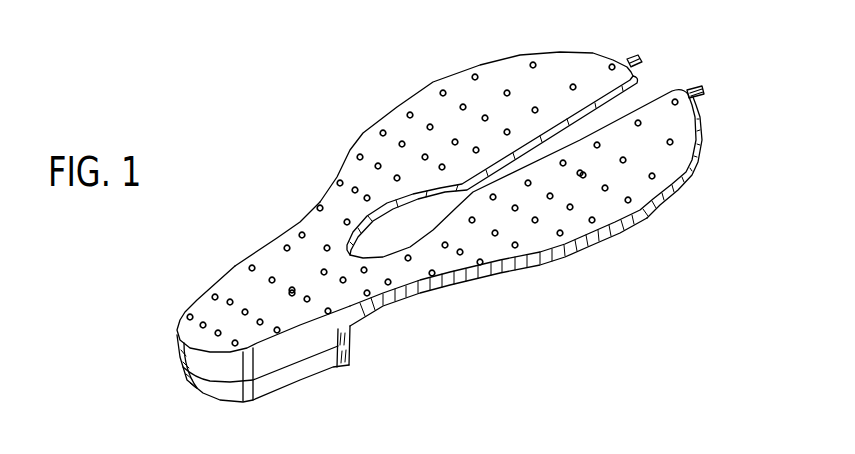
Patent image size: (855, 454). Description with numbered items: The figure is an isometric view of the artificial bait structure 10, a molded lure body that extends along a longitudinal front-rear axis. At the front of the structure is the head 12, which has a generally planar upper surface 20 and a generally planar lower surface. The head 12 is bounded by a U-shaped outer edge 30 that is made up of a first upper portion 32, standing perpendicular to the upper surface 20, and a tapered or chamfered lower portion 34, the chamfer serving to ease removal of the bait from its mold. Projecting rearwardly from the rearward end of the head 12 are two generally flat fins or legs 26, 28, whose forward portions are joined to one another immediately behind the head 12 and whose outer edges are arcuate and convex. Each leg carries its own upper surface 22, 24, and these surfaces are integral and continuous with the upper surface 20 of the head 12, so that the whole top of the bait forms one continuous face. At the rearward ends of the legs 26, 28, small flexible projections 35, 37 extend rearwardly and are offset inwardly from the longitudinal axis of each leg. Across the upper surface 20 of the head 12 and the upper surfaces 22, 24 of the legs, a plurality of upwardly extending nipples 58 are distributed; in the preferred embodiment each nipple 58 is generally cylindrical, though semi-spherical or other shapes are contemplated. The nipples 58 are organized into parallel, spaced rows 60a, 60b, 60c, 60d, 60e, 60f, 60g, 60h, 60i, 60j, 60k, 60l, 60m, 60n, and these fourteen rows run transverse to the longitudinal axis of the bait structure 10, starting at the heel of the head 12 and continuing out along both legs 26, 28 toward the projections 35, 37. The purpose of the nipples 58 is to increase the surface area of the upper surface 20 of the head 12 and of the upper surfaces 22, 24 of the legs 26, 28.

The artificial bait structure 10 is at (436, 229).
The head 12 is at (298, 388).
The upper surface 20 is at (244, 290).
The upper surface 22 is at (392, 150).
The upper surface 24 is at (665, 158).
The leg 26 is at (439, 80).
The leg 28 is at (671, 192).
The U-shaped outer edge 30 is at (180, 366).
The first upper portion 32 is at (182, 352).
The lower portion 34 is at (322, 367).
The flexible projection 35 is at (638, 56).
The flexible projection 37 is at (696, 90).
The nipple 58 is at (283, 246).
The row 60a is at (240, 343).
The row 60b is at (210, 293).
The row 60c is at (331, 312).
The row 60d is at (370, 292).
The row 60e is at (302, 232).
The row 60f is at (318, 204).
The row 60g is at (484, 263).
The row 60h is at (520, 246).
The row 60i is at (565, 233).
The row 60j is at (407, 114).
The row 60k is at (630, 201).
The row 60l is at (475, 73).
The row 60m is at (532, 61).
The row 60n is at (610, 63).